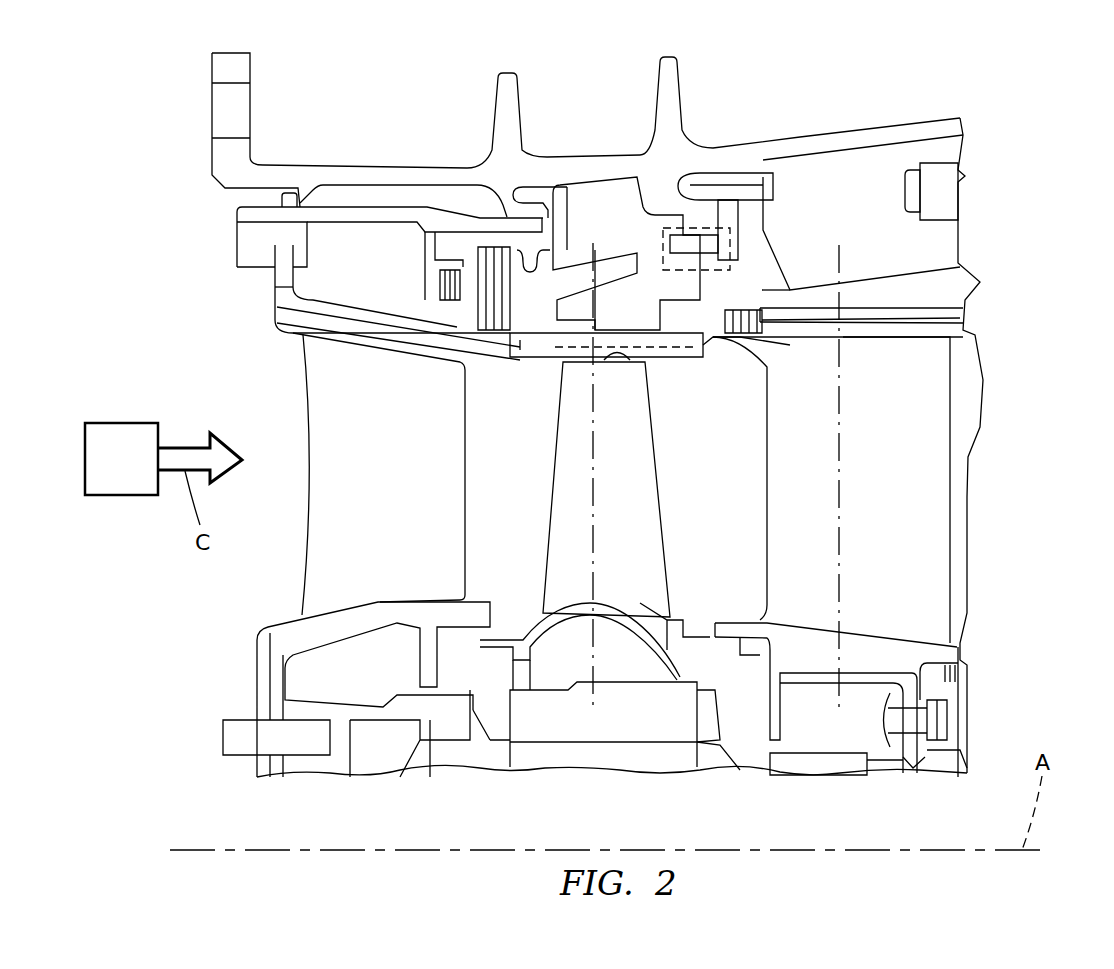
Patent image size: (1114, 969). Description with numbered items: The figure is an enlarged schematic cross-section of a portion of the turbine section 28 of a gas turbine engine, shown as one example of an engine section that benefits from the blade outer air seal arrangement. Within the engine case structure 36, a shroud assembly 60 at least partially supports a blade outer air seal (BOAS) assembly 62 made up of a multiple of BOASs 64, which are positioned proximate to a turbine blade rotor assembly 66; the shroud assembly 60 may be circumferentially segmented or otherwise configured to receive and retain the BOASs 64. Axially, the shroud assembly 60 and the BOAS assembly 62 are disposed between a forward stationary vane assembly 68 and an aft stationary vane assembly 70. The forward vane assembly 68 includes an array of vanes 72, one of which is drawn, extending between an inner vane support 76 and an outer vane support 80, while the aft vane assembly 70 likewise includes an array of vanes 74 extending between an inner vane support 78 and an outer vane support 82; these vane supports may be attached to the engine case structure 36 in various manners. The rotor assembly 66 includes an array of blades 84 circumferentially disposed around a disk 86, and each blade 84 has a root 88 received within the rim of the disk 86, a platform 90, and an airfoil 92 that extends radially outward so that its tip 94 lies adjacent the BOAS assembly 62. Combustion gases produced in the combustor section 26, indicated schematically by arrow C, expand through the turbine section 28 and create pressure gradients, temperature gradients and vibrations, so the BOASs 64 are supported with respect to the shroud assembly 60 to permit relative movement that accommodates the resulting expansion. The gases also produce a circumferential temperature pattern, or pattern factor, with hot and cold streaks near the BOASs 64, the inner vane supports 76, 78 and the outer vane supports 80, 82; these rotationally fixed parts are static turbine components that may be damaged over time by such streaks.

The combustor section 26 is at (137, 477).
The turbine section 28 is at (1012, 148).
The engine case structure 36 is at (777, 136).
The shroud assembly 60 is at (613, 190).
The blade outer air seal (BOAS) assembly 62 is at (538, 368).
The BOAS 64 is at (683, 357).
The turbine blade rotor assembly 66 is at (564, 790).
The forward stationary vane assembly 68 is at (230, 643).
The aft stationary vane assembly 70 is at (992, 638).
The vane 72 is at (405, 457).
The vane 74 is at (896, 512).
The inner vane support 76 is at (290, 615).
The inner vane support 78 is at (892, 652).
The outer vane support 80 is at (293, 328).
The outer vane support 82 is at (913, 337).
The blade 84 is at (640, 518).
The disk 86 is at (658, 787).
The root 88 is at (647, 729).
The platform 90 is at (672, 617).
The airfoil 92 is at (632, 502).
The tip 94 is at (617, 357).